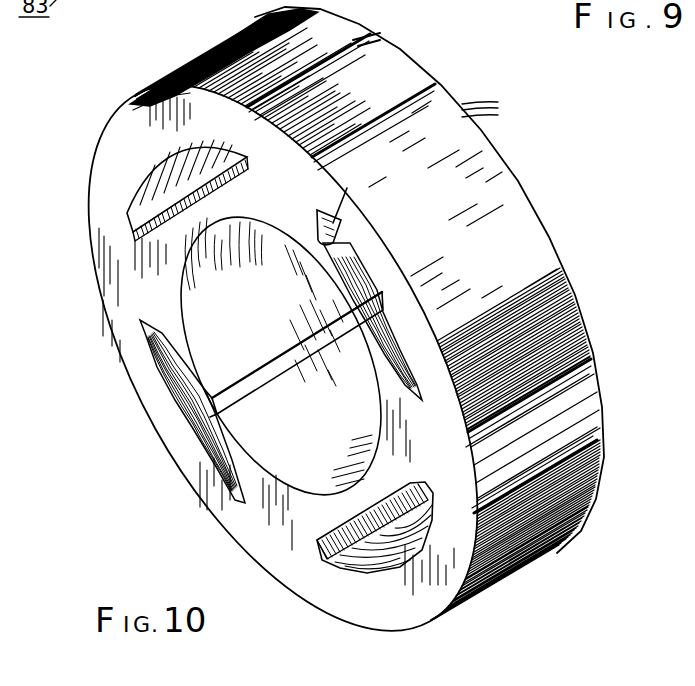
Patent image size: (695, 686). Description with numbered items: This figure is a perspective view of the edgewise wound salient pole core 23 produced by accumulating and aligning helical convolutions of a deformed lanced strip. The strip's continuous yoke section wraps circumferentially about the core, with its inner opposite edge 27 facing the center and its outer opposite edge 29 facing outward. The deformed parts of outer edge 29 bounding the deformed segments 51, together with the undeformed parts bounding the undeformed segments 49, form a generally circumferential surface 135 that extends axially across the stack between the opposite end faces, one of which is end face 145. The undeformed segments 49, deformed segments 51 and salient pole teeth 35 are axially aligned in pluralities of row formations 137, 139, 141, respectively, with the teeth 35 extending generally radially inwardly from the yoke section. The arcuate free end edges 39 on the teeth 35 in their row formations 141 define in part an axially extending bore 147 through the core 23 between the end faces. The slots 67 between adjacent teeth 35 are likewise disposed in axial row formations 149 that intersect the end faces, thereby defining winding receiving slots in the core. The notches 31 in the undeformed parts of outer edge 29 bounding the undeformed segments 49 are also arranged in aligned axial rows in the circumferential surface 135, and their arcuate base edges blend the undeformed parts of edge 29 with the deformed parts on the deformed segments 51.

The salient pole core 23 is at (531, 163).
The opposite edge 27 is at (323, 243).
The opposite edge 29 is at (496, 108).
The notches 31 is at (402, 47).
The salient pole teeth 35 is at (167, 293).
The arcuate edge 39 is at (300, 484).
The undeformed segments 49 is at (100, 232).
The deformed segments 51 is at (125, 133).
The slots 67 is at (127, 190).
The circumferential surface 135 is at (232, 37).
The row formations 137 is at (412, 67).
The row formations 139 is at (536, 213).
The row formations 141 is at (230, 425).
The end face 145 is at (133, 110).
The bore 147 is at (330, 424).
The row formations 149 is at (160, 168).